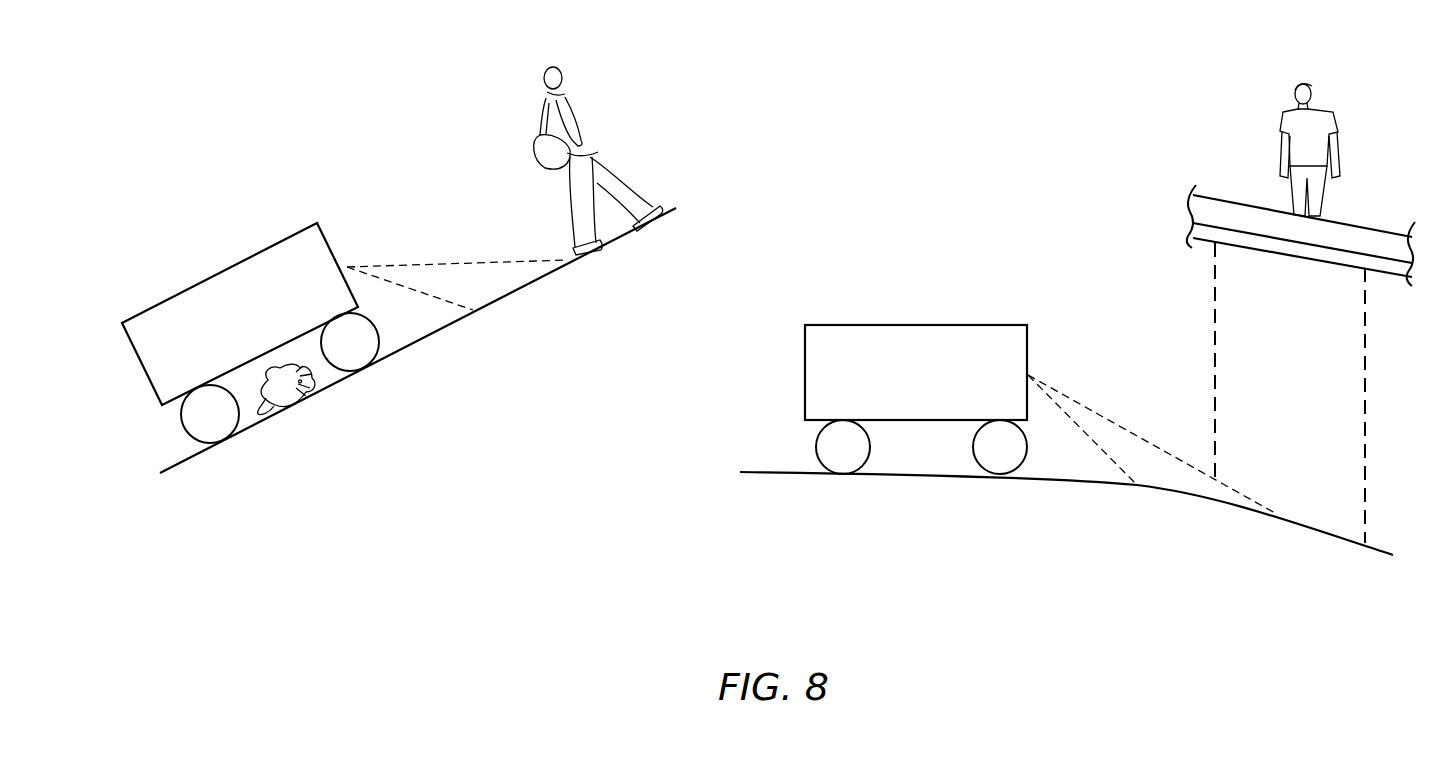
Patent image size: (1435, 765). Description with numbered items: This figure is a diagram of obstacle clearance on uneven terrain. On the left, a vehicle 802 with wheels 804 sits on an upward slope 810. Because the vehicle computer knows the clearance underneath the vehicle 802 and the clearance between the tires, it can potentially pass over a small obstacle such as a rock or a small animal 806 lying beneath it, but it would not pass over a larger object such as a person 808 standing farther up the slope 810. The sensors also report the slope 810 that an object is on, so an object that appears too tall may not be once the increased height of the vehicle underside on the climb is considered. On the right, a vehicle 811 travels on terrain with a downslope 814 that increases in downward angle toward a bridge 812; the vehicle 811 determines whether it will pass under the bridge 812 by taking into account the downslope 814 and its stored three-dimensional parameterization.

The vehicle 802 is at (245, 280).
The wheels 804 is at (362, 352).
The small animal 806 is at (290, 397).
The person 808 is at (545, 103).
The slope 810 is at (547, 275).
The vehicle 811 is at (878, 342).
The bridge 812 is at (1233, 202).
The downslope 814 is at (1233, 507).